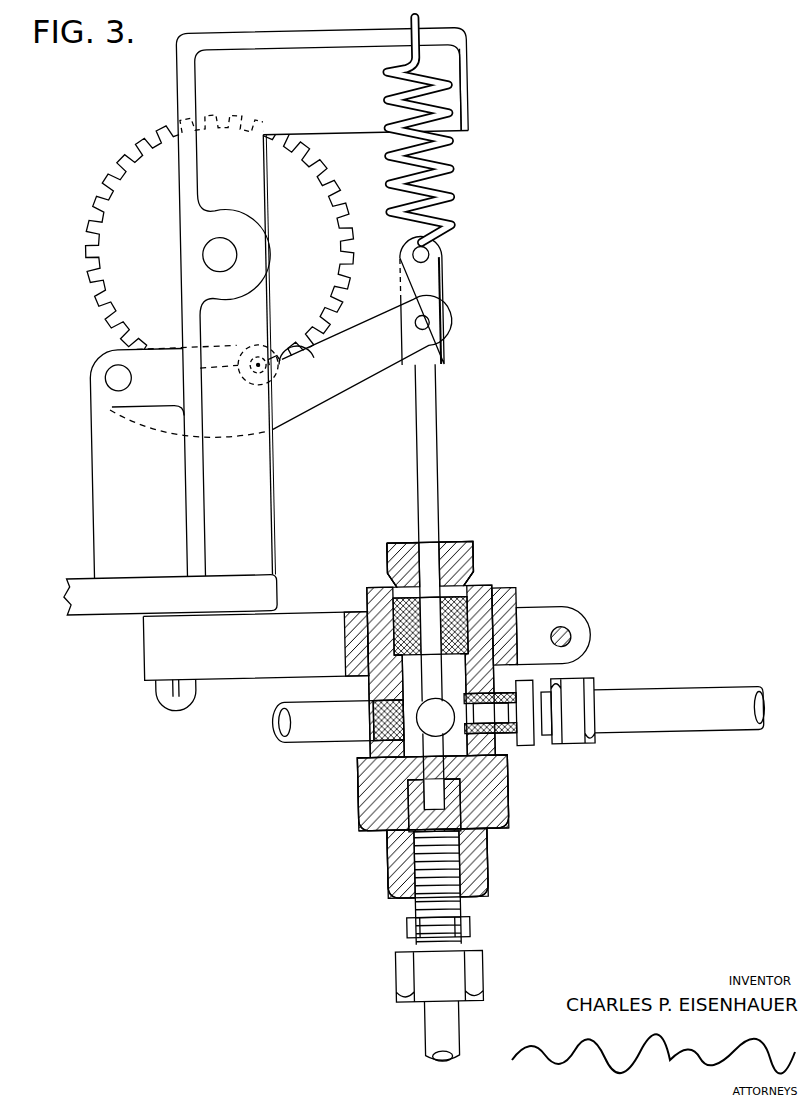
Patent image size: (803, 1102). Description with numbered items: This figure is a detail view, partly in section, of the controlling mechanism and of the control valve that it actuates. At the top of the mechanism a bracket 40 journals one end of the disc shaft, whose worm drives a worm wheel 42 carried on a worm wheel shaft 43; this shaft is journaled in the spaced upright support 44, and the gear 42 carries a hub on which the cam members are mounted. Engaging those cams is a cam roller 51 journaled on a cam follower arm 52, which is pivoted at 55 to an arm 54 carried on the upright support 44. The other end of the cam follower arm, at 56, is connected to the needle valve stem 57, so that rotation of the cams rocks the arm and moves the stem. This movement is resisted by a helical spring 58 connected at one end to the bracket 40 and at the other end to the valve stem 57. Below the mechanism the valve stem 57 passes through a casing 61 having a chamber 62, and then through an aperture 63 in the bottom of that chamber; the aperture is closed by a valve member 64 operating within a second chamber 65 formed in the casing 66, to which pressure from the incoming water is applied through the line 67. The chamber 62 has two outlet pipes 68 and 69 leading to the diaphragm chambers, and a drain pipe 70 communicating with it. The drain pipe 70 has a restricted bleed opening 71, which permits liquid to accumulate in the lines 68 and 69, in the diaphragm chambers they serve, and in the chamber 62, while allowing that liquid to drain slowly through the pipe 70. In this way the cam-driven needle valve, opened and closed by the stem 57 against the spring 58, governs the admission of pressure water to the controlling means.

The bracket 40 is at (463, 65).
The worm wheel 42 is at (95, 252).
The worm wheel shaft 43 is at (219, 249).
The upright support 44 is at (251, 503).
The cam roller 51 is at (304, 358).
The cam follower arm 52 is at (347, 376).
The arm 54 is at (160, 383).
The pivot 55 is at (117, 372).
The connection to valve stem 56 is at (435, 323).
The needle valve stem 57 is at (443, 441).
The helical spring 58 is at (456, 168).
The casing 61 is at (482, 622).
The chamber 62 is at (454, 674).
The aperture 63 is at (500, 769).
The valve member 64 is at (457, 800).
The second chamber 65 is at (453, 843).
The casing 66 is at (477, 870).
The line 67 is at (456, 939).
The outlet pipe 68 is at (305, 735).
The outlet pipe 69 is at (373, 719).
The drain pipe 70 is at (642, 705).
The restricted bleed opening 71 is at (419, 709).